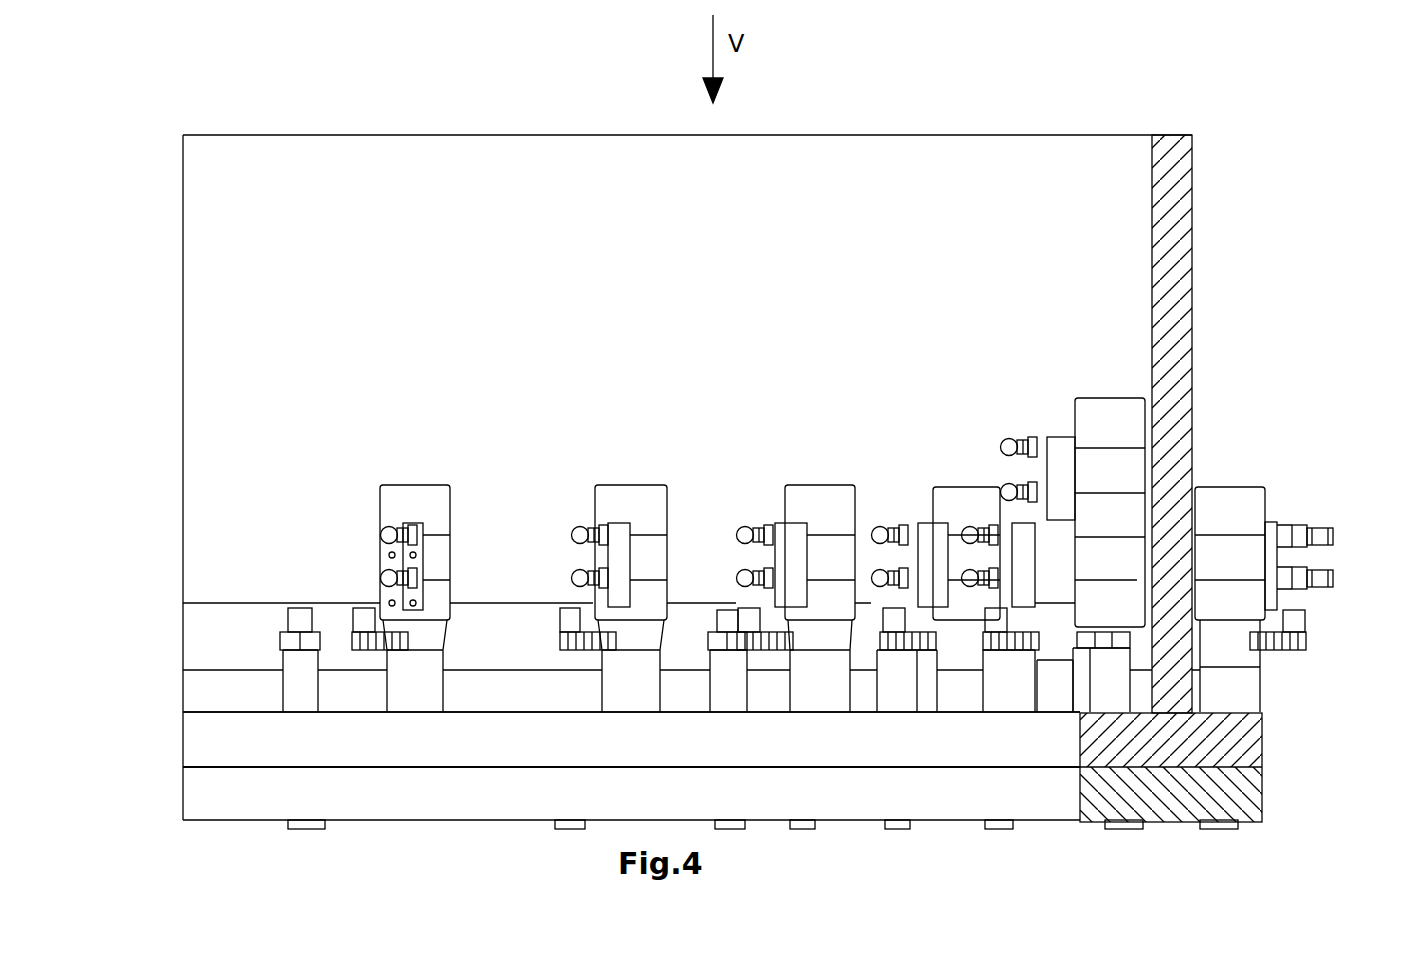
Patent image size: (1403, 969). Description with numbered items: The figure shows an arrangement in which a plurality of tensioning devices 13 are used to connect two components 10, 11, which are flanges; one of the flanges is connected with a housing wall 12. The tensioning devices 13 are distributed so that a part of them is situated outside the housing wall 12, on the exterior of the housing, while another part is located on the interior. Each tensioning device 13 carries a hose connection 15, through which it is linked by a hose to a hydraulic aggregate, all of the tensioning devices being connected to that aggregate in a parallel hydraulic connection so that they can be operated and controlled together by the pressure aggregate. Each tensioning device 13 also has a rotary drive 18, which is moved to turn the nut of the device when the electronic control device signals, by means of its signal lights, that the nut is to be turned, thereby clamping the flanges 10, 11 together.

The component 10 is at (212, 795).
The component 11 is at (210, 733).
The housing wall 12 is at (1190, 222).
The tensioning device 13 is at (830, 455).
The hose connection 15 is at (1323, 525).
The rotary drive 18 is at (1290, 648).